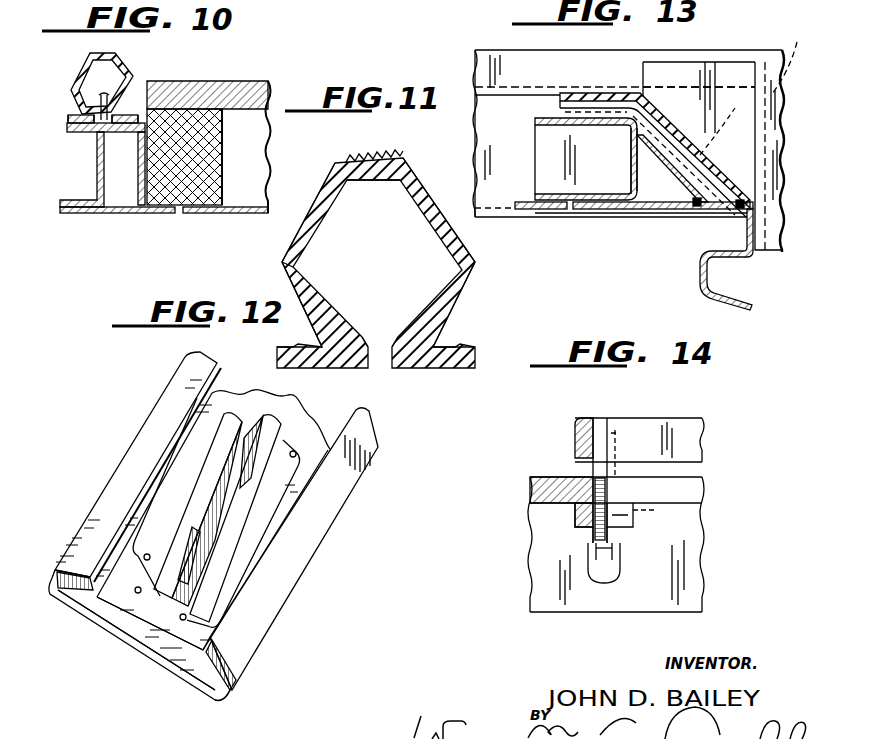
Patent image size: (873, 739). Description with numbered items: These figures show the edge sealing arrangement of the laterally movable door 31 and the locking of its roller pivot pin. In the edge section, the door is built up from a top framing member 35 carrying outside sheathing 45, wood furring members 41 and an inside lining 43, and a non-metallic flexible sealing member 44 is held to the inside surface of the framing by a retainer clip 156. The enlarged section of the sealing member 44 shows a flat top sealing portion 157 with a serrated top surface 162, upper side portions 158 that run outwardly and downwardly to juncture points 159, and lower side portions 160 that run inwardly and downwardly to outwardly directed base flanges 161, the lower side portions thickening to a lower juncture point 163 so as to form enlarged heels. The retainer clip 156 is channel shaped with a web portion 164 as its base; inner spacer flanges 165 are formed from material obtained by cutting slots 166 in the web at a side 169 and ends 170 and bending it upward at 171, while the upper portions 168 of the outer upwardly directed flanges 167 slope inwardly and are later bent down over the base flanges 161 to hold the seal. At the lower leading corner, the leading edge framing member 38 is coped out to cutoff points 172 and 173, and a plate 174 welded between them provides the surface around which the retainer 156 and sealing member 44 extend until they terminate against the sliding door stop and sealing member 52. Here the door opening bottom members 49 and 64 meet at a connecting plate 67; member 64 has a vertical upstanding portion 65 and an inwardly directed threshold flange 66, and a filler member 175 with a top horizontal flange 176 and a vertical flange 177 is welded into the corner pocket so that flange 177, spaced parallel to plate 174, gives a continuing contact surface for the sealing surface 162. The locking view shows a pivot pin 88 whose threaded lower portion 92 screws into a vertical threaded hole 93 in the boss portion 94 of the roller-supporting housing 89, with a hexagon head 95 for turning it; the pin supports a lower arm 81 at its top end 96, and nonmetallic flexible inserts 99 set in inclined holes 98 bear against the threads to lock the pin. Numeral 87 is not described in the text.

In FIG. 13, the laterally movable door 31 is at (548, 166).
In FIG. 10, the top framing member 35 is at (121, 192).
In FIG. 13, the leading edge framing member 38 is at (655, 202).
In FIG. 10, the wood furring members 41 is at (224, 173).
In FIG. 10, the inside lining 43 is at (251, 81).
In FIG. 10, the non-metallic flexible sealing member 44 is at (128, 64).
In FIG. 11, the non-metallic flexible sealing member 44 is at (312, 195).
In FIG. 13, the non-metallic flexible sealing member 44 is at (665, 106).
In FIG. 10, the outside sheathing 45 is at (199, 213).
In FIG. 13, the outside sheathing 45 is at (550, 210).
In FIG. 13, the door opening bottom member 49 is at (766, 60).
In FIG. 13, the sliding door stop and sealing member 52 is at (652, 210).
In FIG. 13, the door opening bottom member 64 is at (503, 130).
In FIG. 13, the vertical upstanding portion 65 is at (530, 96).
In FIG. 13, the inwardly directed flange 66 is at (505, 58).
In FIG. 13, the connecting plate 67 is at (784, 61).
In FIG. 14, the lower arms 81 is at (673, 418).
In FIG. 14, the bushing block 87 is at (575, 444).
In FIG. 14, the pivot pin 88 is at (592, 468).
In FIG. 14, the roller-supporting housing 89 is at (690, 540).
In FIG. 14, the threaded lower portion 92 is at (588, 545).
In FIG. 14, the vertical threaded hole 93 is at (586, 528).
In FIG. 14, the boss portion 94 is at (624, 540).
In FIG. 14, the hexagon head 95 is at (612, 565).
In FIG. 14, the top end of arm 96 is at (605, 425).
In FIG. 14, the inclined holes 98 is at (580, 506).
In FIG. 14, the nonmetallic flexible inserts 99 is at (612, 496).
In FIG. 10, the retainer clip 156 is at (70, 132).
In FIG. 13, the retainer clip 156 is at (579, 117).
In FIG. 12, the retainer clip 156 is at (302, 566).
In FIG. 11, the flat top sealing portion 157 is at (380, 182).
In FIG. 11, the upper side portions 158 is at (446, 214).
In FIG. 11, the juncture points 159 is at (283, 263).
In FIG. 11, the lower side portions 160 is at (291, 288).
In FIG. 11, the base flanges 161 is at (292, 345).
In FIG. 11, the serrated top surface 162 is at (372, 159).
In FIG. 11, the lower juncture point 163 is at (400, 340).
In FIG. 10, the web portion 164 is at (98, 156).
In FIG. 12, the web portion 164 is at (166, 668).
In FIG. 10, the inner spacer flanges 165 is at (107, 116).
In FIG. 12, the inner spacer flanges 165 is at (280, 452).
In FIG. 12, the slots 166 is at (183, 478).
In FIG. 10, the outer upwardly directed flanges 167 is at (68, 120).
In FIG. 12, the outer upwardly directed flanges 167 is at (50, 590).
In FIG. 10, the upper portions of outer flanges 168 is at (132, 116).
In FIG. 12, the upper portions of outer flanges 168 is at (70, 562).
In FIG. 12, the slot side 169 is at (142, 558).
In FIG. 12, the slot ends 170 is at (293, 450).
In FIG. 12, the bend line 171 is at (230, 530).
In FIG. 13, the outer cutoff point 172 is at (698, 210).
In FIG. 13, the inner cutoff point 173 is at (629, 128).
In FIG. 13, the plate 174 is at (676, 210).
In FIG. 13, the filler member 175 is at (737, 75).
In FIG. 13, the top horizontal flange 176 is at (700, 62).
In FIG. 13, the vertical flange 177 is at (703, 153).